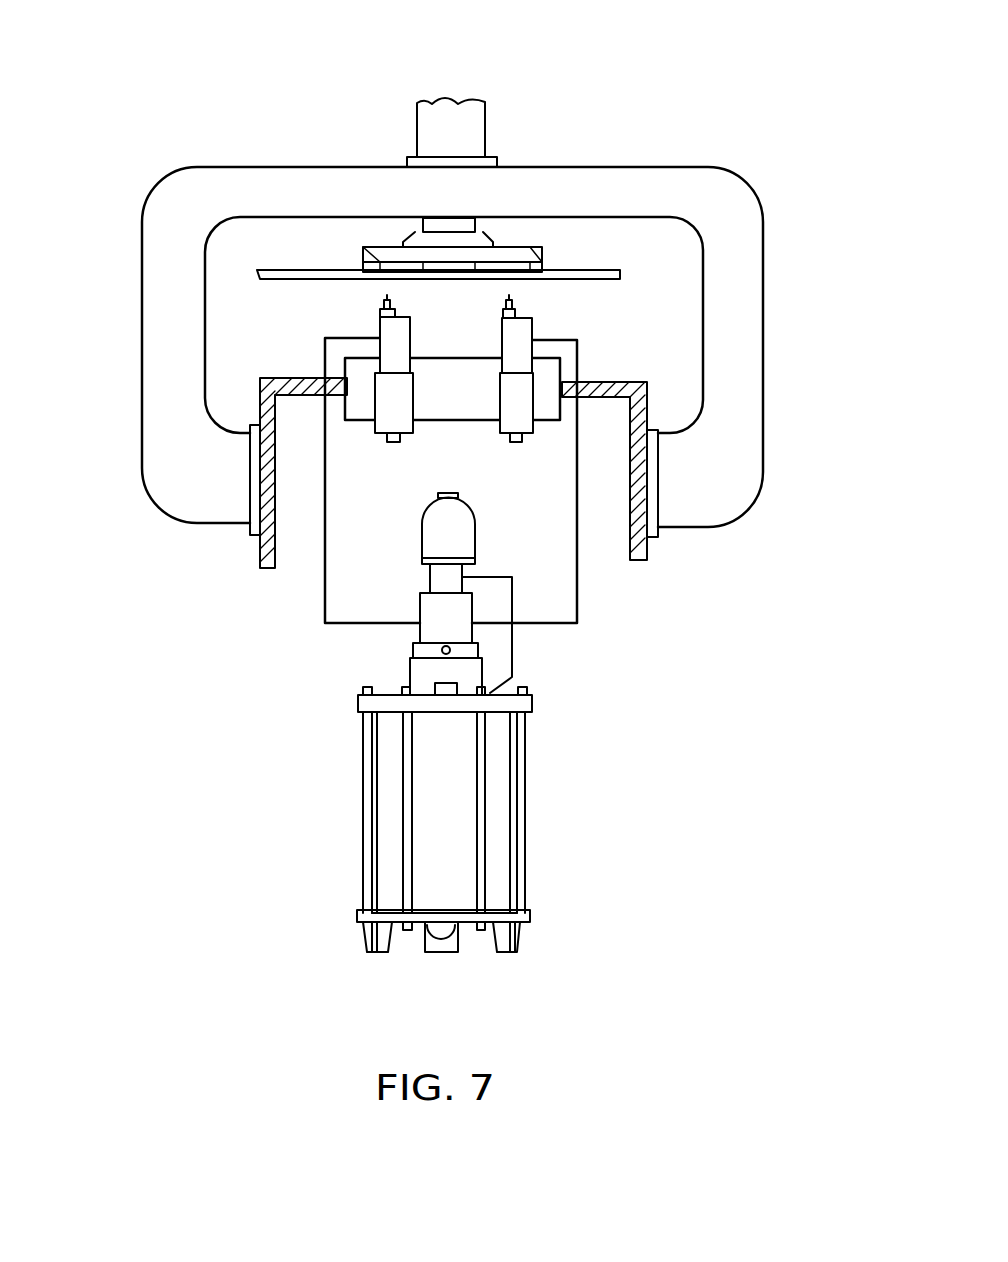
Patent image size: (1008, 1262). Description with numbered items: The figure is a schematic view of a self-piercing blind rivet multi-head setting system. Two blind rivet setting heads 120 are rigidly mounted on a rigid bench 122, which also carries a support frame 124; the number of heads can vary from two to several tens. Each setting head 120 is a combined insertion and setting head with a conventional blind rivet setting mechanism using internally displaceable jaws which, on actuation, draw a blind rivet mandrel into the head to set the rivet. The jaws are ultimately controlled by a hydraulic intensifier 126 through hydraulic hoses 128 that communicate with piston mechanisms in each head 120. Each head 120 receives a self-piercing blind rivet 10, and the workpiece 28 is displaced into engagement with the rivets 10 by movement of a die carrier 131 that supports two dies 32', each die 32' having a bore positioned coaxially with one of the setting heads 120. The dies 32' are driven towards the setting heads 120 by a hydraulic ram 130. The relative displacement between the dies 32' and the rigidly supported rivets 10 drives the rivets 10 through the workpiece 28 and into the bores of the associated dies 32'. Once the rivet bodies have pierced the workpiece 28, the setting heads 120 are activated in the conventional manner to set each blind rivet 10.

The self-piercing blind rivet 10 is at (383, 302).
The workpiece 28 is at (620, 272).
The die 32' is at (444, 182).
The blind rivet setting head 120 is at (400, 418).
The rigid bench 122 is at (643, 552).
The support frame 124 is at (743, 433).
The hydraulic intensifier 126 is at (427, 818).
The hydraulic hose 128 is at (325, 622).
The hydraulic ram 130 is at (463, 112).
The die carrier 131 is at (398, 253).